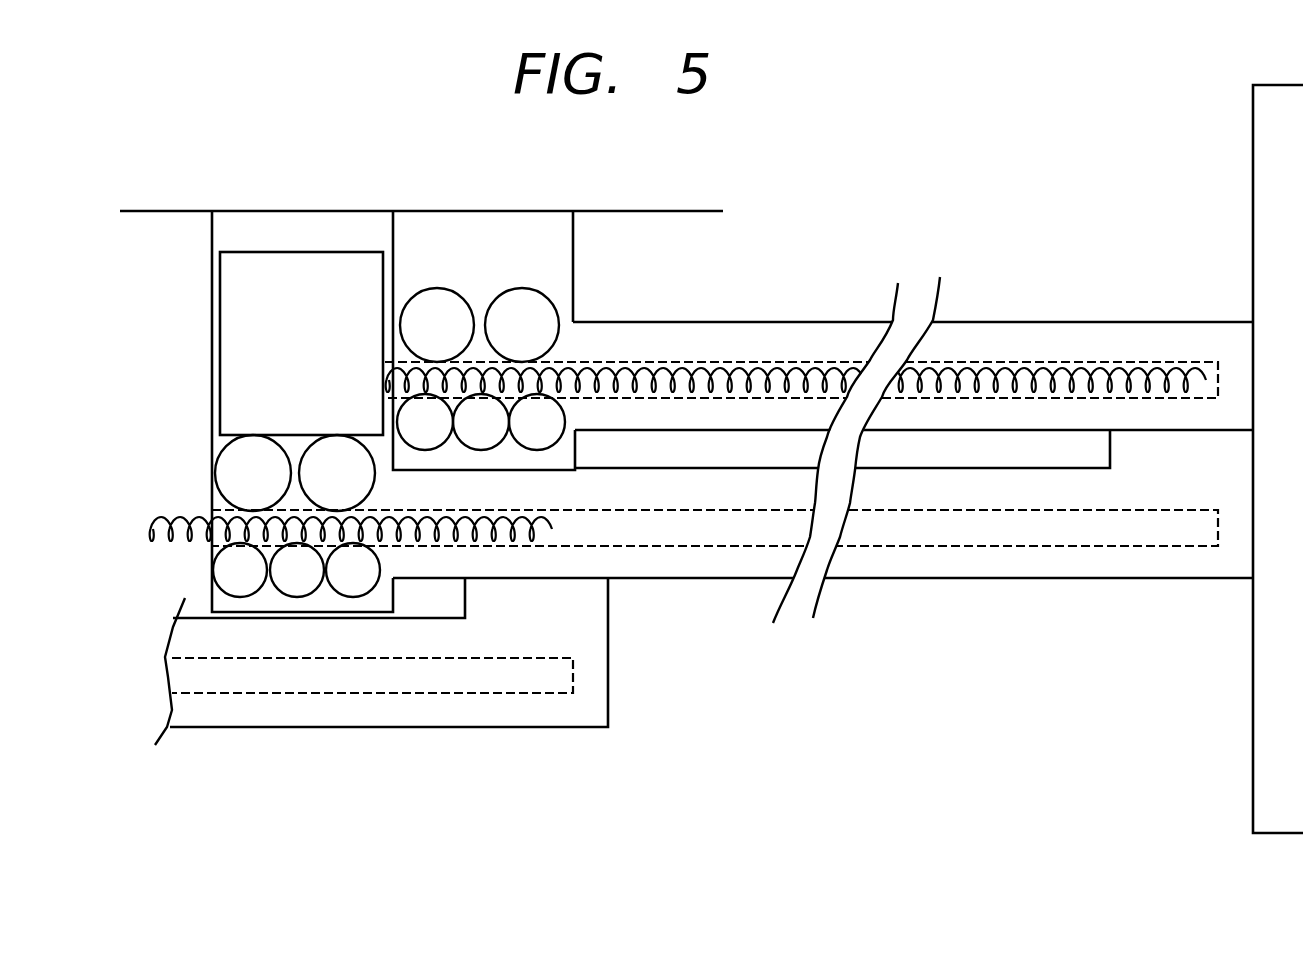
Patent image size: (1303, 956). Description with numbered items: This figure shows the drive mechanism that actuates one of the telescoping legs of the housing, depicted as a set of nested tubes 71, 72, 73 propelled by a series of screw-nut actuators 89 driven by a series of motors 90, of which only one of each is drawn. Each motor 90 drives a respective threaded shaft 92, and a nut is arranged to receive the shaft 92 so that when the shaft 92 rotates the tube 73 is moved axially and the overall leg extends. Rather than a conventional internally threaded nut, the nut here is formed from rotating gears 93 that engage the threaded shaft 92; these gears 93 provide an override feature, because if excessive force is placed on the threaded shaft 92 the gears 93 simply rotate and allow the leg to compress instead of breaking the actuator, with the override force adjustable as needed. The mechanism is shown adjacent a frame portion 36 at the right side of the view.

The frame member 36 is at (1252, 745).
The tube 71 is at (470, 727).
The tube 72 is at (672, 578).
The tube 73 is at (977, 430).
The screw-nut actuator 89 is at (862, 176).
The motor 90 is at (313, 280).
The threaded shaft 92 is at (647, 365).
The rotating gears 93 is at (549, 295).